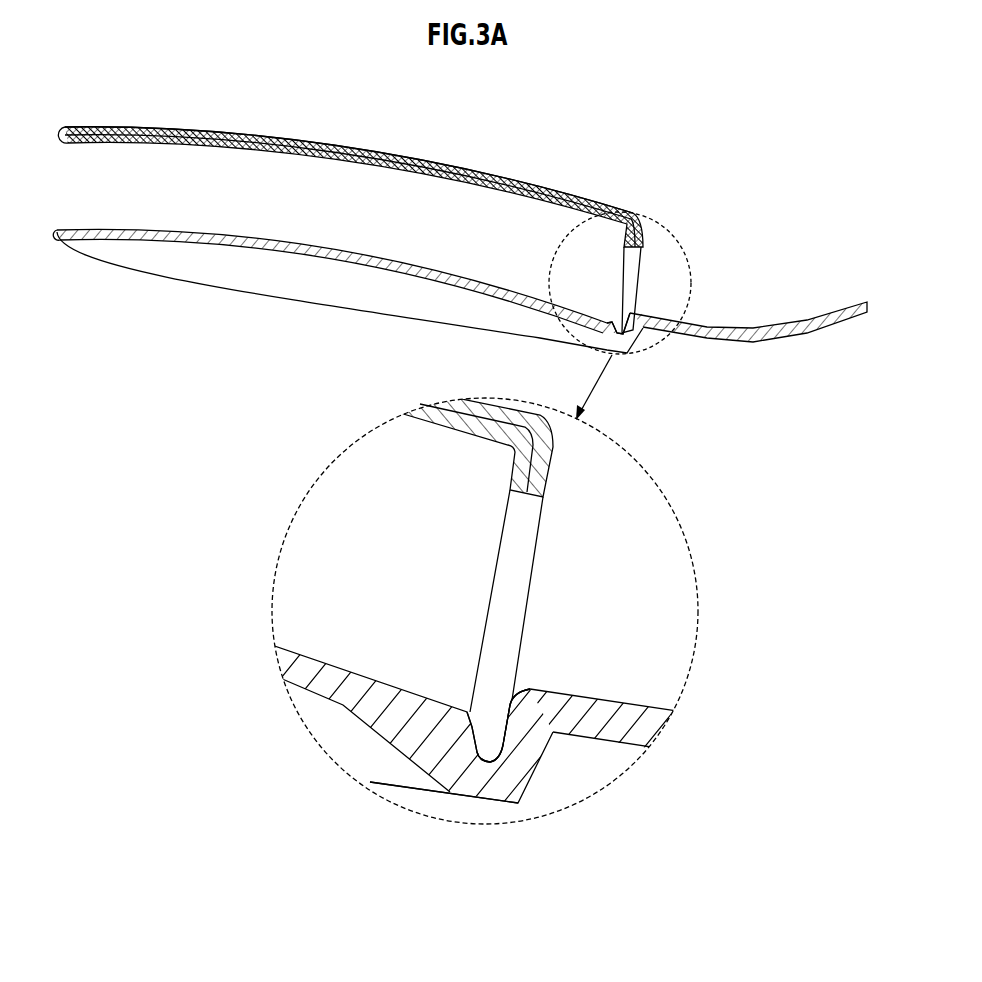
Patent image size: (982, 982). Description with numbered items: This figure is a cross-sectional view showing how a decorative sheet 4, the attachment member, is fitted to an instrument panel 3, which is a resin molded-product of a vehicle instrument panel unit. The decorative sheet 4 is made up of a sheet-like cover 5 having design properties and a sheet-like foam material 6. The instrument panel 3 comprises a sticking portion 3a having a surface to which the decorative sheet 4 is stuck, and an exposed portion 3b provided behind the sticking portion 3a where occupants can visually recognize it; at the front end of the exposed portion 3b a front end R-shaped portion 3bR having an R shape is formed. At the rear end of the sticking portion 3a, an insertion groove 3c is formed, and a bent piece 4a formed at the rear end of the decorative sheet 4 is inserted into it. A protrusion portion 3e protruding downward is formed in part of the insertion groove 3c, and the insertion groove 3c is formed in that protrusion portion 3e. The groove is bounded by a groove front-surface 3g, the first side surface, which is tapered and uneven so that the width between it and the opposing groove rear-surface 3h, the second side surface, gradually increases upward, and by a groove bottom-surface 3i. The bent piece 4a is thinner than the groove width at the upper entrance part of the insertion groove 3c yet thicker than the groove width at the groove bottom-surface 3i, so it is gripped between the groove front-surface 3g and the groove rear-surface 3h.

The instrument panel 3 is at (380, 253).
The sticking portion 3a is at (260, 237).
The exposed portion 3b is at (727, 325).
The front end R-shaped portion 3bR is at (521, 692).
The insertion groove 3c is at (622, 330).
The protrusion portion 3e is at (507, 766).
The groove front-surface 3g is at (468, 753).
The groove rear-surface 3h is at (510, 688).
The groove bottom-surface 3i is at (507, 752).
The decorative sheet 4 is at (472, 160).
The bent piece 4a is at (647, 236).
The sheet-like cover 5 is at (318, 142).
The sheet-like foam material 6 is at (210, 138).